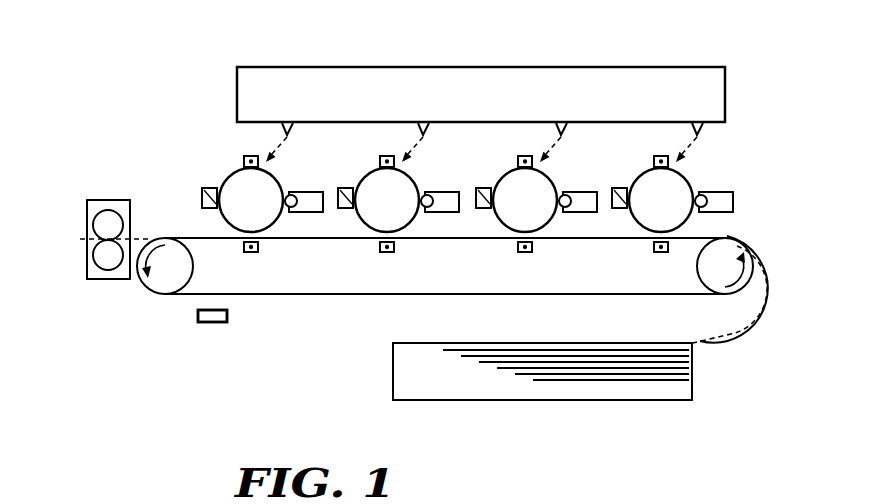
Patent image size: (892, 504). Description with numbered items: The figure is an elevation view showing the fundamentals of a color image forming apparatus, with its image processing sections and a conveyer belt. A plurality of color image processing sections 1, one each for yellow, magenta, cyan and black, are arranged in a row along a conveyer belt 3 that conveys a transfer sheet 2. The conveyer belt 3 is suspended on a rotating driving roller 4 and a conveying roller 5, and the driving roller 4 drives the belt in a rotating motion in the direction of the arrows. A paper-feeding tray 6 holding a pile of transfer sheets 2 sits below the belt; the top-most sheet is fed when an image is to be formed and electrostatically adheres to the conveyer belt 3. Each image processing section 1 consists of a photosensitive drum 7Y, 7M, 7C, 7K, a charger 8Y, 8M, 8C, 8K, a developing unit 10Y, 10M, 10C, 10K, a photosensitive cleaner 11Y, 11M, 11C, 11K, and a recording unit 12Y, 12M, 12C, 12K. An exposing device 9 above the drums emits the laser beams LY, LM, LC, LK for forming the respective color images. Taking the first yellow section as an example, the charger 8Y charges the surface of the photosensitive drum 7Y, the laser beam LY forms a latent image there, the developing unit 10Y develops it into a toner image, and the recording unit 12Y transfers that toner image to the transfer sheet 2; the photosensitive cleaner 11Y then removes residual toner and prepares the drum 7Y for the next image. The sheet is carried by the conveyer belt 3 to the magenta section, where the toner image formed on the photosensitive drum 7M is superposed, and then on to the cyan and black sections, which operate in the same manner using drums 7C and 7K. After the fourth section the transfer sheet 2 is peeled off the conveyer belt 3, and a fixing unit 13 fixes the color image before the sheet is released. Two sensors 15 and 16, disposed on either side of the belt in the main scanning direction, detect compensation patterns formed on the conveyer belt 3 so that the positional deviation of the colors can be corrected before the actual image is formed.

The color image processing section 1 is at (196, 112).
The transfer sheet 2 is at (600, 360).
The conveyer belt 3 is at (350, 296).
The driving roller 4 is at (723, 281).
The conveying roller 5 is at (158, 288).
The paper-feeding tray 6 is at (471, 401).
The photosensitive drum 7K is at (280, 183).
The photosensitive drum 7C is at (416, 183).
The photosensitive drum 7M is at (554, 183).
The photosensitive drum 7Y is at (693, 184).
The charger 8K is at (247, 156).
The charger 8C is at (387, 156).
The charger 8M is at (525, 156).
The charger 8Y is at (661, 156).
The exposing device 9 is at (468, 80).
The developing unit 10K is at (303, 212).
The developing unit 10C is at (439, 212).
The developing unit 10M is at (577, 212).
The developing unit 10Y is at (715, 213).
The photosensitive cleaner 11K is at (209, 188).
The photosensitive cleaner 11C is at (345, 188).
The photosensitive cleaner 11M is at (483, 188).
The photosensitive cleaner 11Y is at (619, 188).
The recording unit 12K is at (250, 252).
The recording unit 12C is at (386, 252).
The recording unit 12M is at (524, 252).
The recording unit 12Y is at (660, 252).
The fixing unit 13 is at (108, 199).
The sensor 15 is at (230, 357).
The sensor 16 is at (210, 323).
The laser beam LK is at (284, 123).
The laser beam LC is at (420, 123).
The laser beam LM is at (558, 123).
The laser beam LY is at (694, 123).